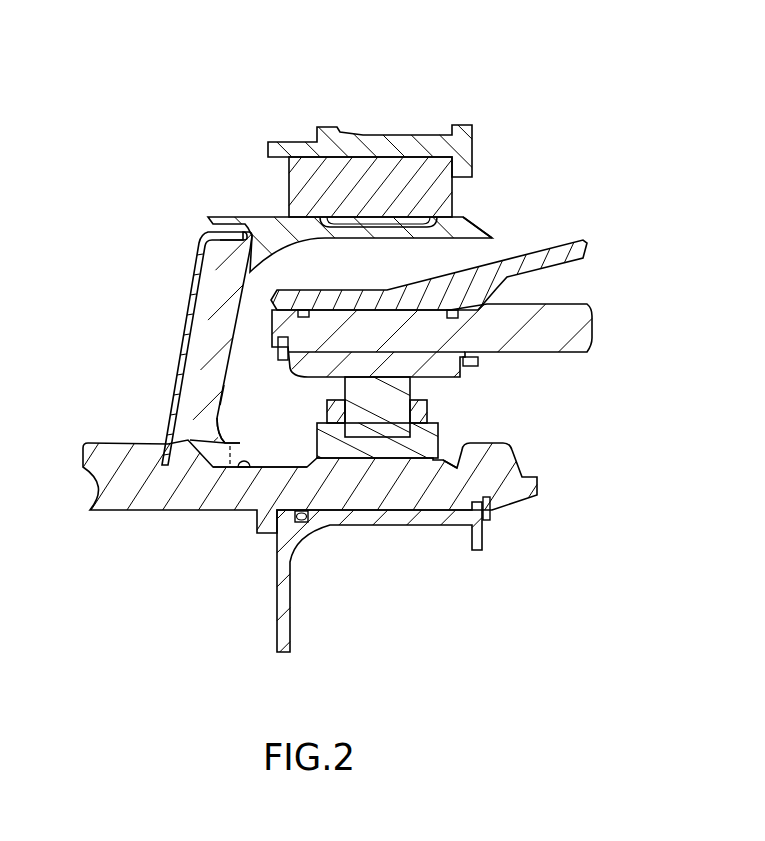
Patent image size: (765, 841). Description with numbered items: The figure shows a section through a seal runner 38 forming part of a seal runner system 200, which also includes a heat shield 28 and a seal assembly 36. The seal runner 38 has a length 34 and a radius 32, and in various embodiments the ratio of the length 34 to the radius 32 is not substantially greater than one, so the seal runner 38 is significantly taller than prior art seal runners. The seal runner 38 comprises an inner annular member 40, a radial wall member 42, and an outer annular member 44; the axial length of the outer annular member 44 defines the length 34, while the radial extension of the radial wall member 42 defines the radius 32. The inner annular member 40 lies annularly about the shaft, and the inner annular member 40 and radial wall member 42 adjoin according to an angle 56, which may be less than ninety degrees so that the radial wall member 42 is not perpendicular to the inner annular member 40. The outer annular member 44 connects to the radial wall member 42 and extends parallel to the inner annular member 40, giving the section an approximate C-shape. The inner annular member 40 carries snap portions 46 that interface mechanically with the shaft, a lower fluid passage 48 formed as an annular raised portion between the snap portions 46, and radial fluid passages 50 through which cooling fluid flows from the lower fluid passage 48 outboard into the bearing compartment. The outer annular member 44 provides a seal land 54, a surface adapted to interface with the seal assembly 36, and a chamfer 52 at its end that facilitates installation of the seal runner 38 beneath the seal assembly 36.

The seal runner system 200 is at (172, 135).
The heat shield 28 is at (178, 328).
The radius 32 is at (197, 223).
The length 34 is at (492, 237).
The seal assembly 36 is at (443, 190).
The seal runner 38 is at (180, 195).
The inner annular member 40 is at (291, 458).
The radial wall member 42 is at (213, 375).
The outer annular member 44 is at (290, 217).
The snap portions 46 is at (190, 464).
The lower fluid passage 48 is at (255, 430).
The radial fluid passages 50 is at (247, 442).
The chamfer 52 is at (482, 222).
The seal land 54 is at (367, 228).
The angle 56 is at (229, 411).